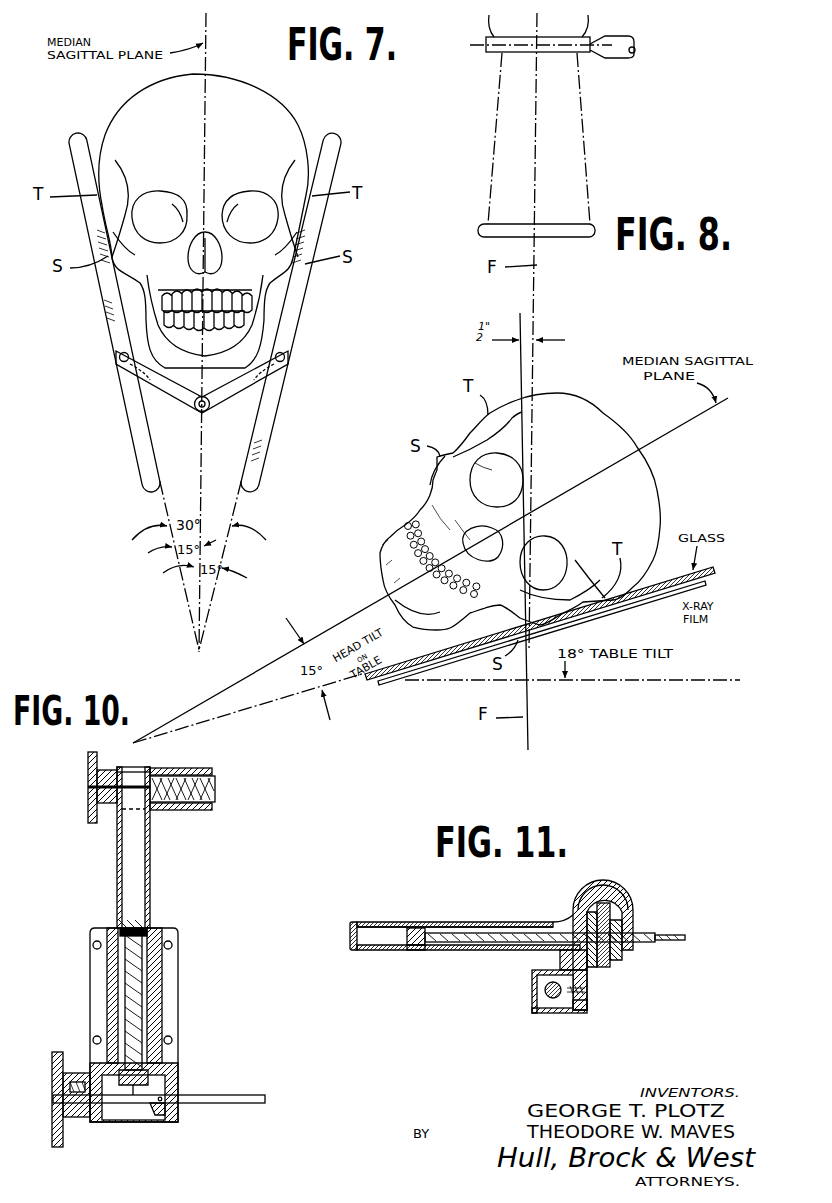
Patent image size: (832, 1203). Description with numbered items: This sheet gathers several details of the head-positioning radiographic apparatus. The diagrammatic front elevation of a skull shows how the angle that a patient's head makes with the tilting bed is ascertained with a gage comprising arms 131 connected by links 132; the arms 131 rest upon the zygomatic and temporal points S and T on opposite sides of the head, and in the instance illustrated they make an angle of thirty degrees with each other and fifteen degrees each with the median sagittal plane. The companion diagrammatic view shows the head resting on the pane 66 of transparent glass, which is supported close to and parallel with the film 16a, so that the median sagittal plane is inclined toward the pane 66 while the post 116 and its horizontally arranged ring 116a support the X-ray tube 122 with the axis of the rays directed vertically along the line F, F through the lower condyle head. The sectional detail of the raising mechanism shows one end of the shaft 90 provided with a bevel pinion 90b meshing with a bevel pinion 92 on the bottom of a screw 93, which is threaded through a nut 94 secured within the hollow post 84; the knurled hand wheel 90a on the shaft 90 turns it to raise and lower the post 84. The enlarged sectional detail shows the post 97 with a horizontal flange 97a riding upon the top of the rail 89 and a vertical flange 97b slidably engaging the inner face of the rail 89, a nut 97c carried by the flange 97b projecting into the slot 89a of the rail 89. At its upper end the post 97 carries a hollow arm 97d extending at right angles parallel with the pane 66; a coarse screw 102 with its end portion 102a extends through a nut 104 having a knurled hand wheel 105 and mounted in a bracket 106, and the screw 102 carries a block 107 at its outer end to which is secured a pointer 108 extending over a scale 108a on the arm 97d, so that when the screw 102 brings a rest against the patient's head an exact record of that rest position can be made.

In FIG. 7, the arms 131 is at (107, 291).
In FIG. 7, the links 132 is at (165, 385).
In FIG. 8, the post 116 is at (622, 55).
In FIG. 8, the ring 116a is at (505, 47).
In FIG. 8, the X-ray tube 122 is at (563, 158).
In FIG. 8, the pane 66 is at (708, 566).
In FIG. 8, the film 16a is at (653, 592).
In FIG. 10, the post 84 is at (116, 871).
In FIG. 10, the nut 94 is at (147, 917).
In FIG. 10, the screw 93 is at (130, 1011).
In FIG. 10, the bevel pinion 92 is at (172, 1062).
In FIG. 10, the shaft 90 is at (213, 1101).
In FIG. 10, the knurled hand wheel 90a is at (52, 1070).
In FIG. 10, the bevel pinion 90b is at (160, 1116).
In FIG. 11, the knurled hand wheel 105 is at (600, 888).
In FIG. 11, the nut 104 is at (612, 916).
In FIG. 11, the bracket 106 is at (620, 930).
In FIG. 11, the coarse screw 102 is at (455, 934).
In FIG. 11, the rod end 102a is at (680, 942).
In FIG. 11, the pointer 108 is at (416, 927).
In FIG. 11, the scale 108a is at (500, 921).
In FIG. 11, the block 107 is at (406, 936).
In FIG. 11, the post 97 is at (590, 975).
In FIG. 11, the horizontal flange 97a is at (562, 962).
In FIG. 11, the vertical flange 97b is at (587, 1006).
In FIG. 11, the nut 97c is at (531, 1008).
In FIG. 11, the hollow arm 97d is at (420, 951).
In FIG. 11, the rail 89 is at (530, 998).
In FIG. 11, the slot 89a is at (560, 1013).